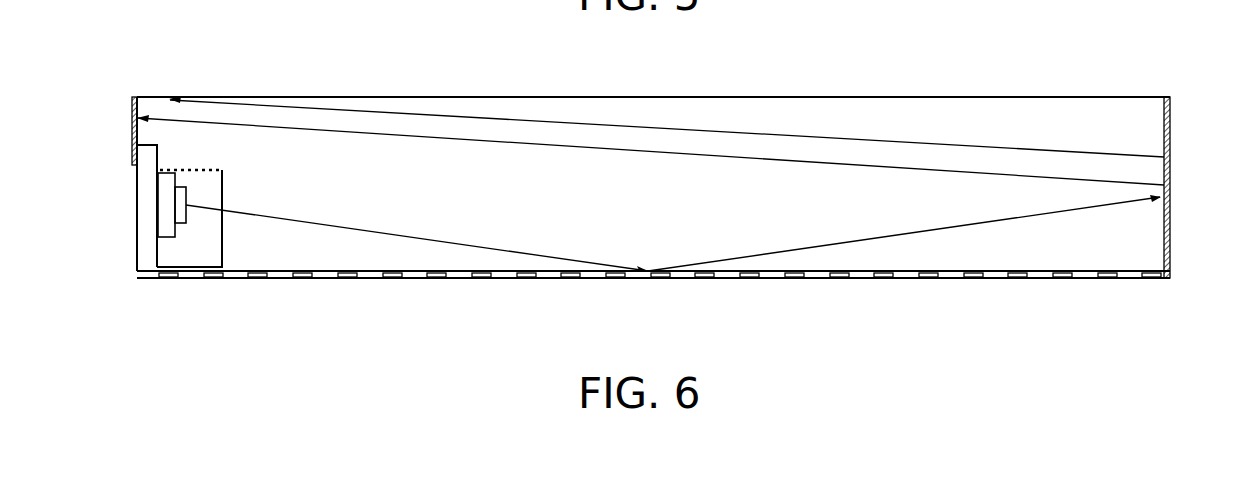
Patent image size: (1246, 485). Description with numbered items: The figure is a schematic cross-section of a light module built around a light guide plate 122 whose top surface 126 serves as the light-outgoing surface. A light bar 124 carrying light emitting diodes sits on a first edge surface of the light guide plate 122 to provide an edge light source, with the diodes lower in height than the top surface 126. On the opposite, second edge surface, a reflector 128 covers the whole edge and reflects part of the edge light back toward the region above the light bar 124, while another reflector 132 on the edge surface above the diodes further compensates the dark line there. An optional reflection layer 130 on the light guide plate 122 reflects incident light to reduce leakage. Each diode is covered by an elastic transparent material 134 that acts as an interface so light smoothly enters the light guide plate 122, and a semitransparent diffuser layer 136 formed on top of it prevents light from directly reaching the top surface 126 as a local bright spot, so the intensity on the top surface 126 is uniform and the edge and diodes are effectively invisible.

The light guide plate 122 is at (1152, 236).
The light bar 124 is at (147, 258).
The top surface 126 is at (1118, 94).
The reflector 128 is at (1171, 126).
The reflection layer 130 is at (1088, 279).
The reflector 132 is at (133, 118).
The elastic transparent material 134 is at (192, 248).
The semitransparent diffuser layer 136 is at (205, 168).